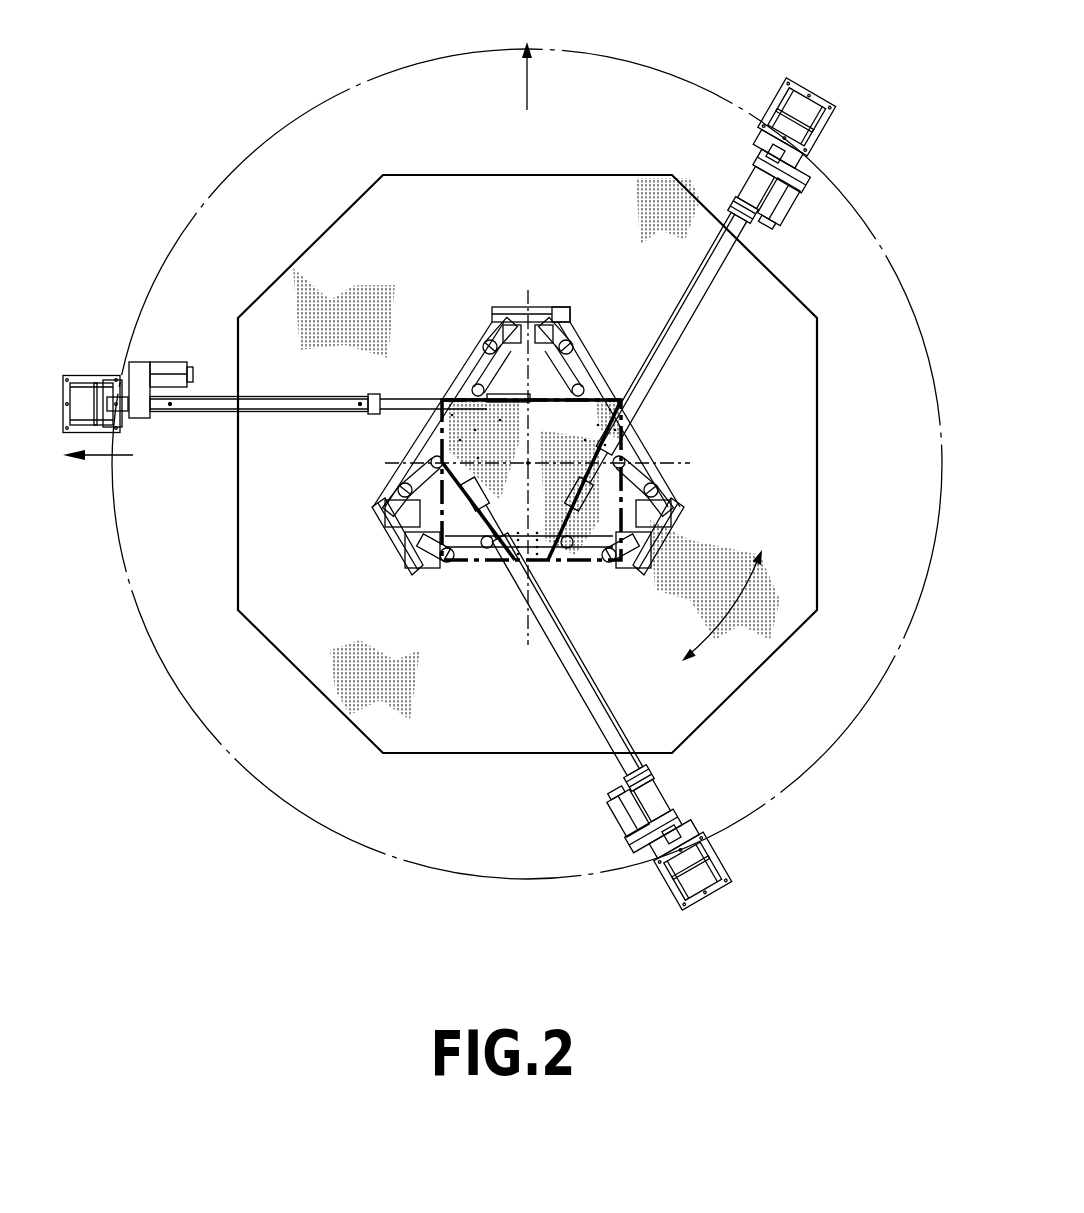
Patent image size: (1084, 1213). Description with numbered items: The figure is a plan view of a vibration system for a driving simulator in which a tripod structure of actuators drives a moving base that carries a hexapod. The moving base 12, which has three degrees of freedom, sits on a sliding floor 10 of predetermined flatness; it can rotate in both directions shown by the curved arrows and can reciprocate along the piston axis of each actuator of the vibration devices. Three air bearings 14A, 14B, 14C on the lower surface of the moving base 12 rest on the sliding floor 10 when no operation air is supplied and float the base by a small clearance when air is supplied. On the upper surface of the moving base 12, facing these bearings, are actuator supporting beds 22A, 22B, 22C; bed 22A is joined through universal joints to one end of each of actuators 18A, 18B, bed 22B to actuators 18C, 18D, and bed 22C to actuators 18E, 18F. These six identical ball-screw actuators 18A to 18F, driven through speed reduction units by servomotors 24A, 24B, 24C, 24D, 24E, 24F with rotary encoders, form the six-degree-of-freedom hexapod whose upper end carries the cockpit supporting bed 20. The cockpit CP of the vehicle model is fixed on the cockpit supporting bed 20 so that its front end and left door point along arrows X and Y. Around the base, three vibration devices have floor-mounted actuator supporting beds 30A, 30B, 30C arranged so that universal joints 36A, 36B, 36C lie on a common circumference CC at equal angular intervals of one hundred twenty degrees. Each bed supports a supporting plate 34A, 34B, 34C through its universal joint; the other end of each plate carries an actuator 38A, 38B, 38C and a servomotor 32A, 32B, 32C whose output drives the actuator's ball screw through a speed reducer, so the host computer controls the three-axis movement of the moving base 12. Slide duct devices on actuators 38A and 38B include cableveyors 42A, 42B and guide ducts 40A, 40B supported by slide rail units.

The sliding floor 10 is at (588, 172).
The moving base 12 is at (592, 378).
The air bearing 14A is at (672, 550).
The air bearing 14B is at (392, 570).
The air bearing 14C is at (485, 303).
The actuator 18A is at (640, 460).
The actuator 18B is at (605, 548).
The actuator 18C is at (470, 548).
The actuator 18D is at (405, 482).
The actuator 18E is at (487, 358).
The actuator 18F is at (560, 360).
The cockpit supporting bed 20 is at (482, 403).
The actuator supporting bed 22A is at (670, 533).
The actuator supporting bed 22B is at (382, 532).
The actuator supporting bed 22C is at (548, 305).
The servomotor 24A is at (660, 500).
The servomotor 24B is at (635, 566).
The servomotor 24C is at (432, 565).
The servomotor 24D is at (383, 508).
The servomotor 24E is at (500, 318).
The servomotor 24F is at (548, 318).
The actuator supporting bed 30A is at (795, 78).
The actuator supporting bed 30B is at (735, 870).
The actuator supporting bed 30C is at (77, 373).
The servomotor 32A is at (792, 212).
The servomotor 32B is at (638, 822).
The servomotor 32C is at (165, 368).
The supporting plate 34A is at (817, 172).
The supporting plate 34B is at (652, 860).
The supporting plate 34C is at (140, 418).
The universal joint 36A is at (805, 158).
The universal joint 36B is at (698, 832).
The universal joint 36C is at (123, 372).
The actuator 38A is at (728, 180).
The actuator 38B is at (670, 782).
The actuator 38C is at (212, 400).
The guide duct 40A is at (690, 300).
The guide duct 40B is at (615, 730).
The cableveyor 42A is at (758, 180).
The cableveyor 42B is at (660, 812).
The common circumference CC is at (250, 152).
The cockpit CP is at (615, 432).
The arrow X is at (527, 59).
The arrow Y is at (95, 473).